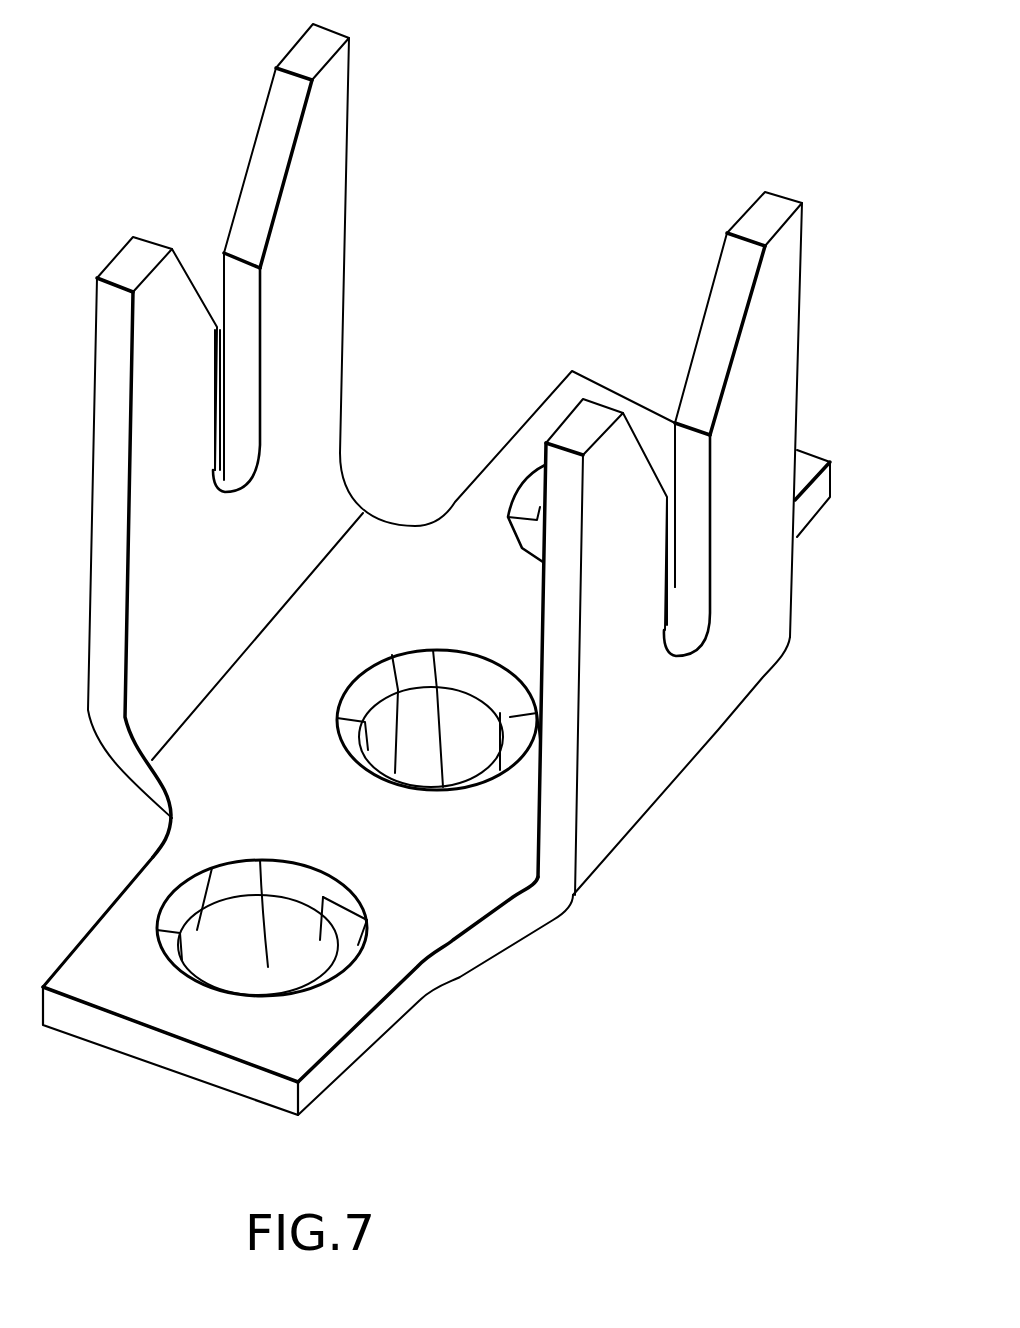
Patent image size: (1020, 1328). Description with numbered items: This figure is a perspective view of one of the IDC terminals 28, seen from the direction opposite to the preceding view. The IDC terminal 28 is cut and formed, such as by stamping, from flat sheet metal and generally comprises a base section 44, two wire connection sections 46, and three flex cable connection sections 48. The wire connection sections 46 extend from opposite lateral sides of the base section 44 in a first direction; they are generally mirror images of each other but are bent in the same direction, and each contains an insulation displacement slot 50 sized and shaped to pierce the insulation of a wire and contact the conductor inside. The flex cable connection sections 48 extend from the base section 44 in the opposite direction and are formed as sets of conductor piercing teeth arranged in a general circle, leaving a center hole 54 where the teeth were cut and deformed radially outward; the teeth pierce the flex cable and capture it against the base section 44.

The IDC terminal 28 is at (750, 126).
The base section 44 is at (325, 1067).
The wire connection section 46 is at (348, 97).
The flex cable connection section 48 is at (198, 930).
The insulation displacement slot 50 is at (220, 397).
The center hole 54 is at (243, 957).